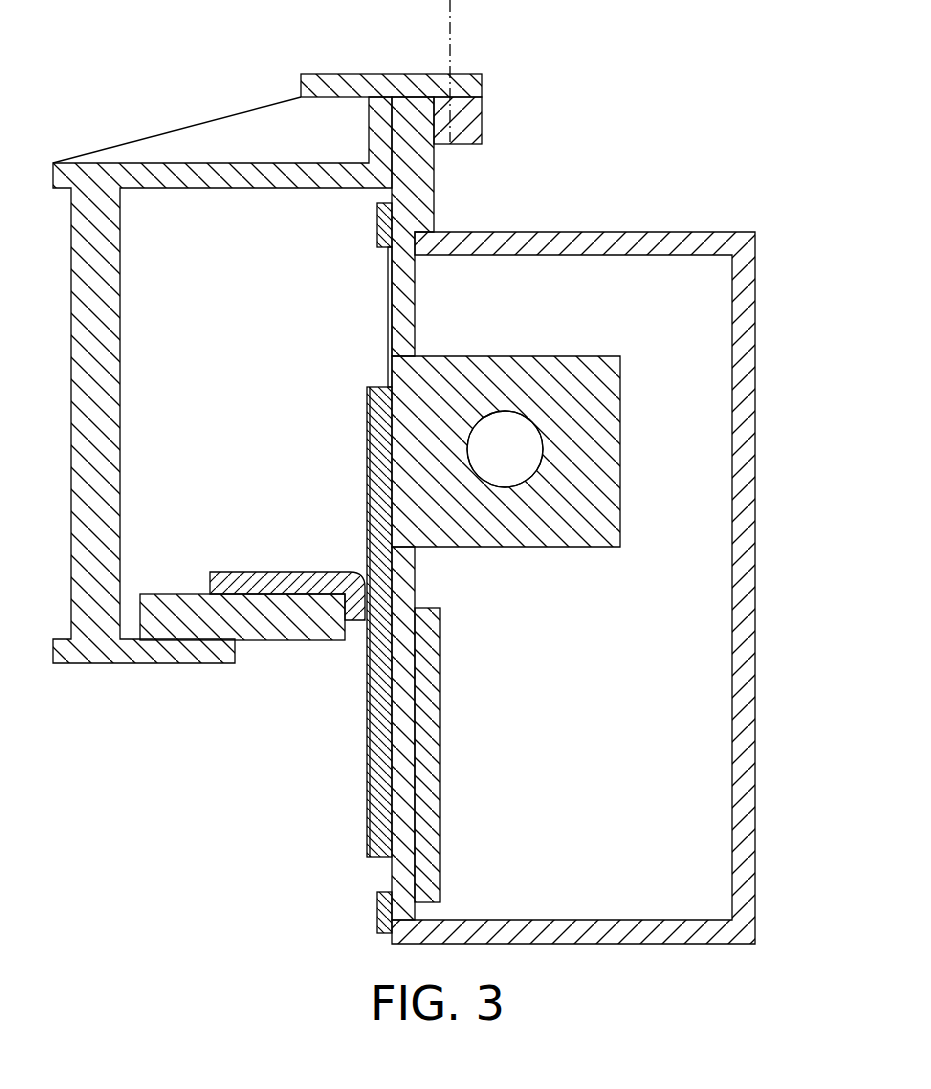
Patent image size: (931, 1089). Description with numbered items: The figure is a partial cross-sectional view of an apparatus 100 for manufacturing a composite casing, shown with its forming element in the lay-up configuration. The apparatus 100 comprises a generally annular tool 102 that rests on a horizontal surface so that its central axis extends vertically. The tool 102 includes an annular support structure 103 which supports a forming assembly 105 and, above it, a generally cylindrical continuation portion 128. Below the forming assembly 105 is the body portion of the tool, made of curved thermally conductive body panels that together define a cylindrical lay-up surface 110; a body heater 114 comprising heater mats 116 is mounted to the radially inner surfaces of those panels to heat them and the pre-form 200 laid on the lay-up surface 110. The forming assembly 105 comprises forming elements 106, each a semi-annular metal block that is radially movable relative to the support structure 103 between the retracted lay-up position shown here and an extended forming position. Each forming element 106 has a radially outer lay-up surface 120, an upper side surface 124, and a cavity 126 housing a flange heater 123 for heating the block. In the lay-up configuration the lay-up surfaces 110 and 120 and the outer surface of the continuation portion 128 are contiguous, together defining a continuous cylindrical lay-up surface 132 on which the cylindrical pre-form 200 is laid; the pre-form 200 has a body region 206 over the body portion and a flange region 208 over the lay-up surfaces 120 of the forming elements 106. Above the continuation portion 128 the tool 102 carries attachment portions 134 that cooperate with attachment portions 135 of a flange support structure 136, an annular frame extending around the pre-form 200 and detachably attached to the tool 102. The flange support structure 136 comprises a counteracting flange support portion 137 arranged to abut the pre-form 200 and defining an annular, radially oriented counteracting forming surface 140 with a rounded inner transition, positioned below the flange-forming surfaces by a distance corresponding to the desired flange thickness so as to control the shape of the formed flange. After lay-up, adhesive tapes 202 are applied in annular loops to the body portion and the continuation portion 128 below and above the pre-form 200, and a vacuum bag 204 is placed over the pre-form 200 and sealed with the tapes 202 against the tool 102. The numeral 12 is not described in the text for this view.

The apparatus 100 is at (702, 60).
The tool 102 is at (668, 222).
The support structure 103 is at (750, 366).
The forming assembly 105 is at (630, 515).
The forming element 106 is at (520, 352).
The lay-up surface 110 is at (385, 688).
The component block 12 is at (596, 356).
The body heater 114 is at (420, 703).
The heater mat 116 is at (428, 770).
The lay-up surface 120 is at (380, 425).
The flange heater 123 is at (505, 472).
The upper side surface 124 is at (573, 548).
The cavity 126 is at (546, 450).
The continuation portion 128 is at (415, 305).
The continuous lay-up surface 132 is at (380, 541).
The attachment portion 134 is at (479, 123).
The attachment portion 135 is at (420, 84).
The flange support structure 136 is at (150, 96).
The counteracting flange support portion 137 is at (262, 582).
The counteracting forming surface 140 is at (220, 568).
The pre-form 200 is at (366, 830).
The adhesive tape 202 is at (378, 225).
The vacuum bag 204 is at (389, 300).
The body region 206 is at (380, 792).
The flange region 208 is at (368, 465).